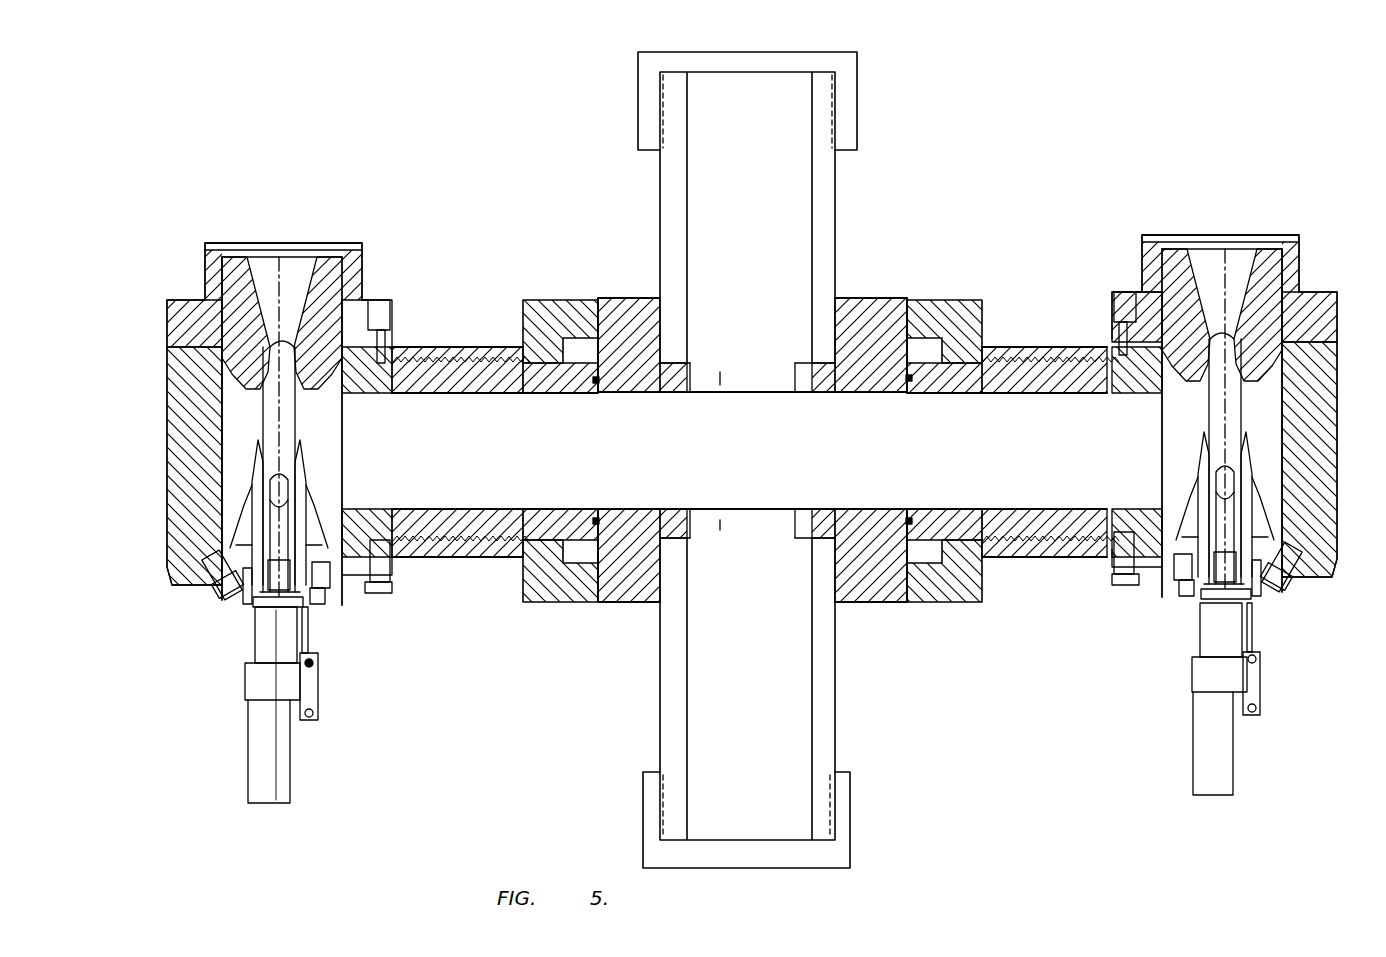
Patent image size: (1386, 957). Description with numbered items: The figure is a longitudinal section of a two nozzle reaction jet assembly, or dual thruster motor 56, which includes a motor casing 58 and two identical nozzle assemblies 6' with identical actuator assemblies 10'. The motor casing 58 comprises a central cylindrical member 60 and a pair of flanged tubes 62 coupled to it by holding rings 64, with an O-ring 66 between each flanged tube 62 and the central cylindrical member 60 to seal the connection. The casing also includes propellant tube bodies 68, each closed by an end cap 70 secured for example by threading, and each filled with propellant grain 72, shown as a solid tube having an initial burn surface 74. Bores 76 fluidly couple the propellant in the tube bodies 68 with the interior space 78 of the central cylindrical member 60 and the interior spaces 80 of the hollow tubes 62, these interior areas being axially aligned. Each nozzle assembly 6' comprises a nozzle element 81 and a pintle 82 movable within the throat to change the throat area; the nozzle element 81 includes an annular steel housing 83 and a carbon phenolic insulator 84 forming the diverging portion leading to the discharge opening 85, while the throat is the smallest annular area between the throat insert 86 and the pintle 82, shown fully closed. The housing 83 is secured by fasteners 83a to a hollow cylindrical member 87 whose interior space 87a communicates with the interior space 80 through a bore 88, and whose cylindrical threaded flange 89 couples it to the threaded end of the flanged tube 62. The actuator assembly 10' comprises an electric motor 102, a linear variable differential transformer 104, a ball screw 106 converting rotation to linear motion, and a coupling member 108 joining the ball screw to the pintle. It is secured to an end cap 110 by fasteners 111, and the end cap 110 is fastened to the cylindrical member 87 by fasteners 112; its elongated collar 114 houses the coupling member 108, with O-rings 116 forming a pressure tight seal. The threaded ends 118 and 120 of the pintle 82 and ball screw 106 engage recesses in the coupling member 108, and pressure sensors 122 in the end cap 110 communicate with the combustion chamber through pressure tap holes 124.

The dual thruster motor 56 is at (1005, 200).
The motor casing 58 is at (958, 290).
The central cylindrical member 60 is at (876, 300).
The flanged tube 62 is at (532, 382).
The holding ring 64 is at (560, 300).
The O-ring 66 is at (597, 385).
The propellant tube body 68 is at (837, 215).
The end cap 70 is at (852, 120).
The propellant grain 72 is at (713, 445).
The initial burn surface 74 is at (800, 372).
The bore 76 is at (722, 378).
The interior space 78 is at (750, 461).
The interior space 80 is at (750, 459).
The nozzle element 81 is at (212, 243).
The pintle 82 is at (262, 395).
The annular steel housing 83 is at (368, 270).
The fastener 83a is at (390, 318).
The insulator 84 is at (345, 252).
The discharge opening 85 is at (305, 248).
The throat insert 86 is at (232, 345).
The hollow cylindrical member 87 is at (172, 485).
The interior space 87a is at (190, 508).
The bore 88 is at (392, 463).
The cylindrical threaded flange 89 is at (452, 352).
The nozzle assembly 6' is at (786, 207).
The actuator assembly 10' is at (765, 705).
The electric motor 102 is at (290, 790).
The linear variable differential transformer 104 is at (318, 690).
The ball screw 106 is at (290, 637).
The coupling member 108 is at (282, 485).
The end cap 110 is at (392, 570).
The fastener 111 is at (250, 607).
The fastener 112 is at (392, 588).
The collar 114 is at (232, 548).
The O-ring 116 is at (305, 515).
The end of pintle 118 is at (322, 450).
The end of ball screw 120 is at (248, 603).
The pressure sensor 122 is at (218, 598).
The pressure tap hole 124 is at (215, 578).